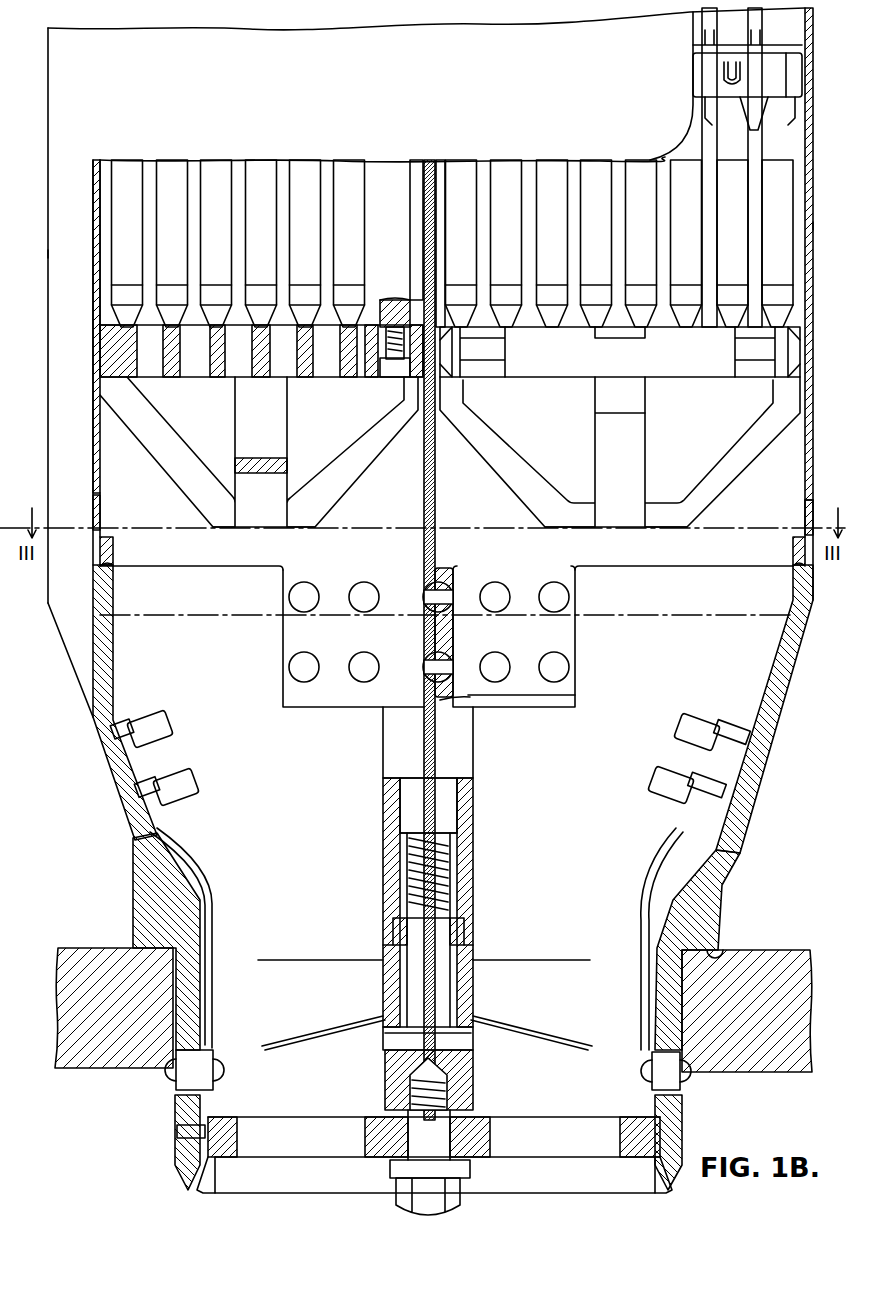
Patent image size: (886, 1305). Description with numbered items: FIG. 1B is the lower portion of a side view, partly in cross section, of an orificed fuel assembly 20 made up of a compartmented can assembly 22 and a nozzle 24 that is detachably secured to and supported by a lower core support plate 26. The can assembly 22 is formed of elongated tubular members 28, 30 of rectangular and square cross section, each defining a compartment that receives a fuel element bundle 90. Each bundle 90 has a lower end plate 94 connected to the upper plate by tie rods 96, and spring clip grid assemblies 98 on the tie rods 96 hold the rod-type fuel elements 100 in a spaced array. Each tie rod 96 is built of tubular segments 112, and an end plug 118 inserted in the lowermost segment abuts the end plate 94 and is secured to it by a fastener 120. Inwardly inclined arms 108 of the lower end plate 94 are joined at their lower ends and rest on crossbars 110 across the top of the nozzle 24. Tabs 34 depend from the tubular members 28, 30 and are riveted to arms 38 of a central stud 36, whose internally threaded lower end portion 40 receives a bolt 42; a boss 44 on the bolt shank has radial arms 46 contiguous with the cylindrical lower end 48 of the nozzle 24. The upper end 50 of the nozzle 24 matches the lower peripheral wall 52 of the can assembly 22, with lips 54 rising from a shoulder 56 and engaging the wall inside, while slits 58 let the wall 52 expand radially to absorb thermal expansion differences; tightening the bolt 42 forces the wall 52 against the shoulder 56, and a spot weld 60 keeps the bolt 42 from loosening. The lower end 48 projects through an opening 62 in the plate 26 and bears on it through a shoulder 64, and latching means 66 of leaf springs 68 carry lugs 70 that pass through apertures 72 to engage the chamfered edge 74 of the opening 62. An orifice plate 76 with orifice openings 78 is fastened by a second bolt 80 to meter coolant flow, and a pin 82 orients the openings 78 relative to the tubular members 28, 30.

The fuel assembly 20 is at (244, 15).
The can assembly 22 is at (48, 87).
The nozzle 24 is at (722, 862).
The lower core support plate 26 is at (758, 1065).
The tubular member 28 is at (93, 274).
The tubular member 30 is at (48, 254).
The tab 34 is at (372, 707).
The central stud 36 is at (465, 810).
The arm 38 is at (470, 638).
The internally threaded lower end portion 40 is at (458, 853).
The bolt 42 is at (462, 1078).
The boss 44 is at (468, 960).
The arm 46 is at (345, 968).
The cylindrical lower end 48 is at (682, 1128).
The upper end 50 is at (93, 630).
The lower peripheral wall 52 is at (93, 493).
The lip 54 is at (113, 551).
The shoulder 56 is at (108, 570).
The slit 58 is at (102, 513).
The spot weld 60 is at (470, 1035).
The opening 62 is at (655, 987).
The shoulder 64 is at (740, 960).
The latching means 66 is at (208, 856).
The leaf spring 68 is at (213, 900).
The lug 70 is at (205, 1058).
The aperture 72 is at (203, 1098).
The chamfered edge 74 is at (165, 1076).
The orifice plate 76 is at (238, 1162).
The orifice opening 78 is at (307, 1162).
The second bolt 80 is at (440, 1200).
The pin 82 is at (177, 1131).
The fuel element bundle 90 is at (100, 197).
The lower end plate 94 is at (213, 377).
The tie rod 96 is at (442, 170).
The spring clip grid assembly 98 is at (693, 74).
The rod-type fuel element 100 is at (272, 172).
The inwardly inclined arm 108 is at (205, 467).
The crossbar 110 is at (472, 527).
The tubular segment 112 is at (378, 176).
The end plug 118 is at (396, 345).
The fastener 120 is at (393, 378).